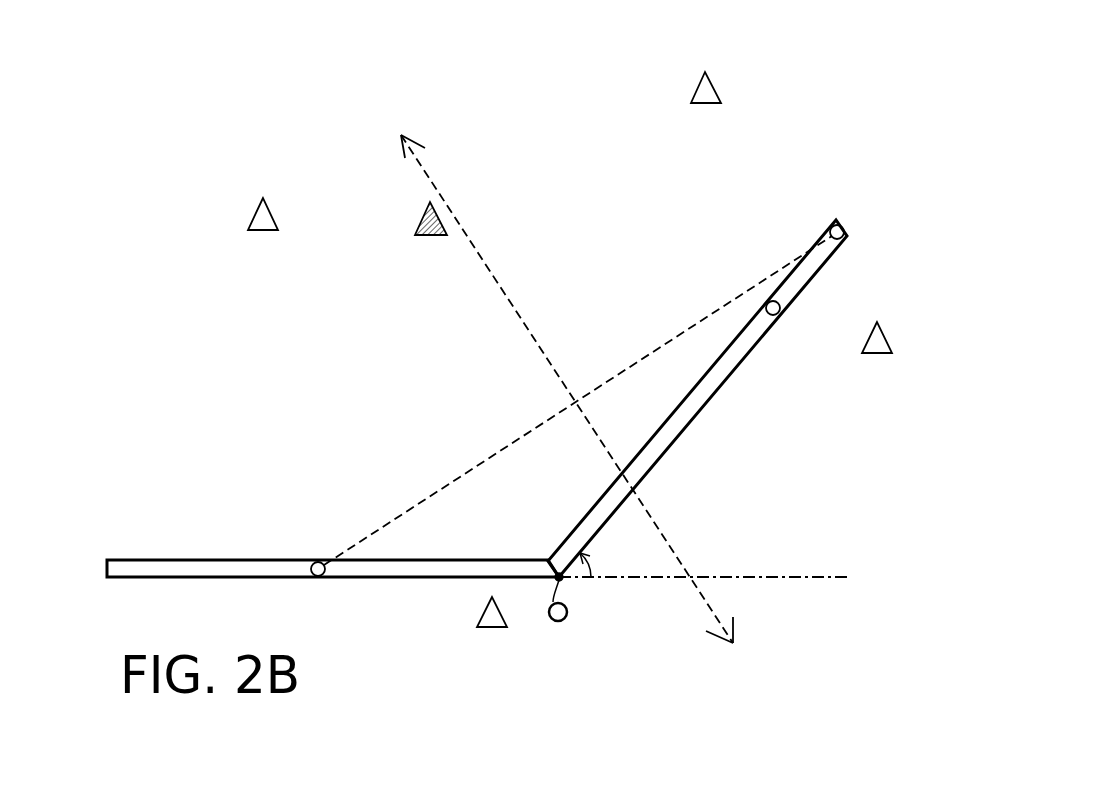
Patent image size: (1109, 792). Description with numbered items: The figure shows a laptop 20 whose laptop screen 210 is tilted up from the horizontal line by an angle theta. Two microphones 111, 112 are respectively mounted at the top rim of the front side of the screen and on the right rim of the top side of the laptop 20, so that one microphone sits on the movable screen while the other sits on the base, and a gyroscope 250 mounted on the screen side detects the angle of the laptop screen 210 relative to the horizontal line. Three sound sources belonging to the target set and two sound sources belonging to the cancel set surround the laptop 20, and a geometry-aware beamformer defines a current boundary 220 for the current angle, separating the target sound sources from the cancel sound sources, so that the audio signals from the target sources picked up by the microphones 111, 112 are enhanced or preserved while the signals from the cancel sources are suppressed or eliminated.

The laptop 20 is at (137, 170).
The microphone 111 is at (839, 226).
The microphone 112 is at (316, 576).
The laptop screen 210 is at (684, 425).
The current boundary 220 is at (656, 522).
The gyroscope 250 is at (780, 310).